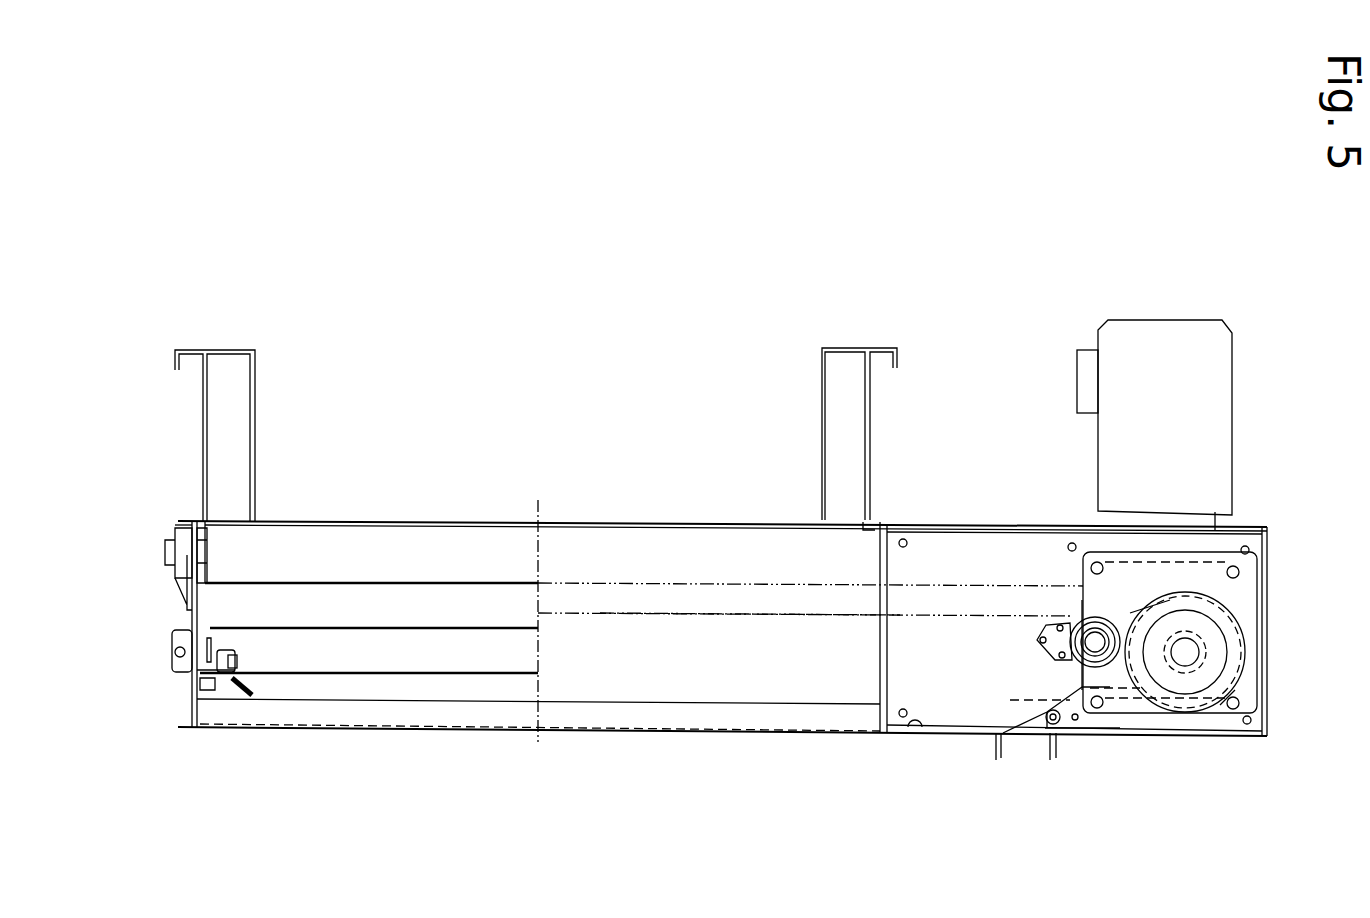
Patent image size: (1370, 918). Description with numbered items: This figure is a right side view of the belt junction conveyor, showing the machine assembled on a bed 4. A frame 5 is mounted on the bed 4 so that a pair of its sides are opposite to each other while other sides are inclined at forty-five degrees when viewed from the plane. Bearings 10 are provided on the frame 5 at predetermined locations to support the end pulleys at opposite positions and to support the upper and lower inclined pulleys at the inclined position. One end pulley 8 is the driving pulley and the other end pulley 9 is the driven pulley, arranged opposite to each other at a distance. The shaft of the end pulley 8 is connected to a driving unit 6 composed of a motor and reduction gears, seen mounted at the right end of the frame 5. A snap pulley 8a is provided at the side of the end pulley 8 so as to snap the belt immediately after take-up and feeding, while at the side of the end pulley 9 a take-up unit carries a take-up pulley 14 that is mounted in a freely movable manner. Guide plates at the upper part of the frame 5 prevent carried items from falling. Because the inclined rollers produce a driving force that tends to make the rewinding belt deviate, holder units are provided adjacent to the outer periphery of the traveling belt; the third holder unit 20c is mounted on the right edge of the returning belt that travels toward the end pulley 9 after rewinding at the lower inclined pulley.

The bed 4 is at (915, 727).
The frame 5 is at (1270, 540).
The driving unit 6 is at (1172, 312).
The end pulley 8 is at (1195, 718).
The snap pulley 8a is at (1105, 665).
The end pulley 9 is at (362, 538).
The bearing 10 is at (182, 542).
The take-up pulley 14 is at (377, 663).
The third holder unit 20c is at (215, 695).